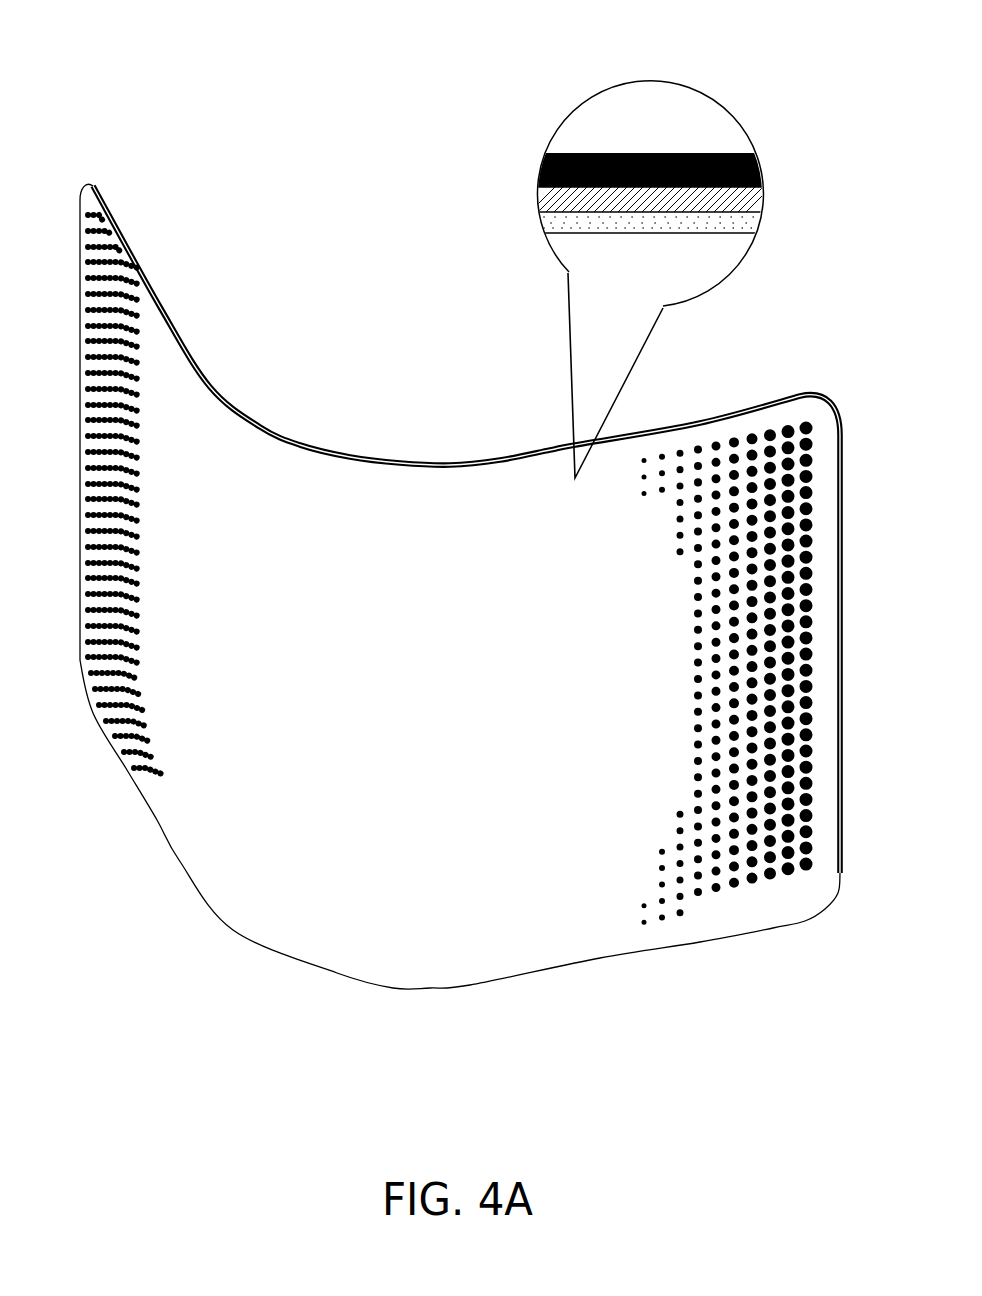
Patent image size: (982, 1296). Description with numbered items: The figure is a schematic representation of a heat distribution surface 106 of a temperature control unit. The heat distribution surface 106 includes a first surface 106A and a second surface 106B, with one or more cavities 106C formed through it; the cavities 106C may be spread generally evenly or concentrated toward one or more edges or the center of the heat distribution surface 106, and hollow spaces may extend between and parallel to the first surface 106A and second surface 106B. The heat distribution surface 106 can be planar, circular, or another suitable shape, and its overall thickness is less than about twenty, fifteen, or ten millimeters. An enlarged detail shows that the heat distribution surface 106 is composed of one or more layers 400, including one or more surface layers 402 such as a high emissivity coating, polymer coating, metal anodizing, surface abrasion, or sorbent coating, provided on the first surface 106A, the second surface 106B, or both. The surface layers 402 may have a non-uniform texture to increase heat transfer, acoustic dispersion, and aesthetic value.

The heat distribution surface 106 is at (189, 80).
The first surface 106A is at (193, 843).
The second surface 106B is at (272, 430).
The cavities 106C is at (729, 928).
The layers 400 is at (516, 166).
The surface layers 402 is at (512, 201).